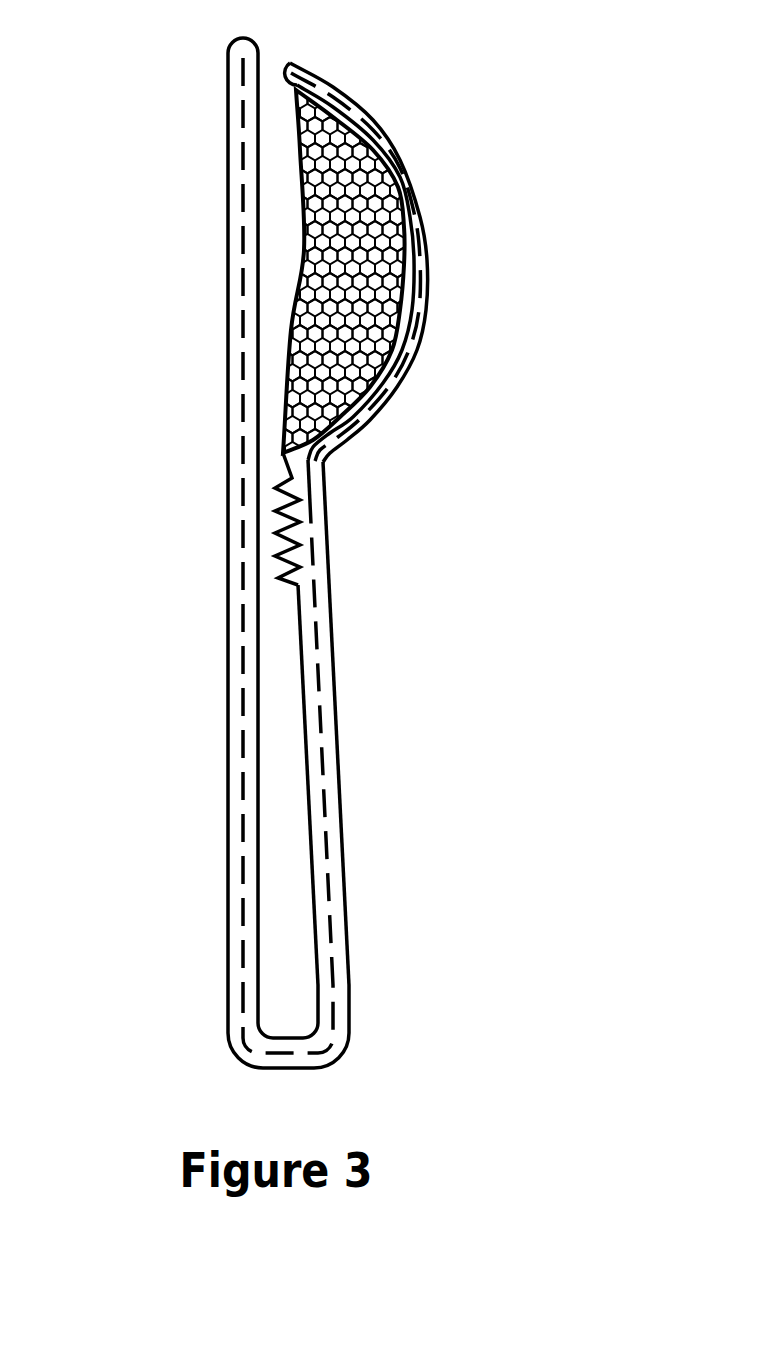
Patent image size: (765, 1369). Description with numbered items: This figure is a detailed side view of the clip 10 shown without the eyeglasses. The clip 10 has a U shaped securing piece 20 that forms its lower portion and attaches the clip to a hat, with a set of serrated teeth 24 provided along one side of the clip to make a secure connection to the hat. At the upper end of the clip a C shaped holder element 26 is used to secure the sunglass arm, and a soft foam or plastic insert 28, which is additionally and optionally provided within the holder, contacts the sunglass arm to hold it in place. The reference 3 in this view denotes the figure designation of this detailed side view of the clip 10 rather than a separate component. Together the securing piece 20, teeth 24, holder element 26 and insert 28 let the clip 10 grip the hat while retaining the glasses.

The clip 10 is at (228, 332).
The U shaped securing piece 20 is at (227, 972).
The arm 3 is at (330, 852).
The serrated teeth 24 is at (310, 538).
The C shaped holder element 26 is at (422, 292).
The soft foam or plastic insert 28 is at (350, 150).